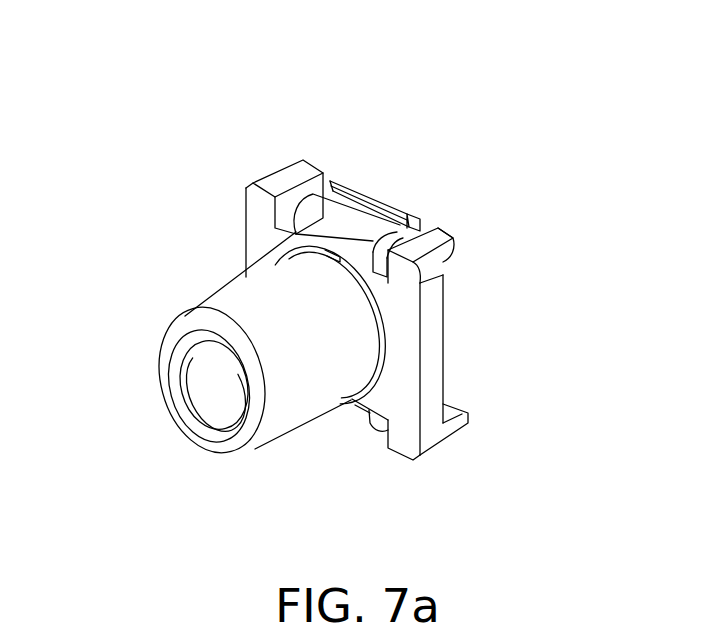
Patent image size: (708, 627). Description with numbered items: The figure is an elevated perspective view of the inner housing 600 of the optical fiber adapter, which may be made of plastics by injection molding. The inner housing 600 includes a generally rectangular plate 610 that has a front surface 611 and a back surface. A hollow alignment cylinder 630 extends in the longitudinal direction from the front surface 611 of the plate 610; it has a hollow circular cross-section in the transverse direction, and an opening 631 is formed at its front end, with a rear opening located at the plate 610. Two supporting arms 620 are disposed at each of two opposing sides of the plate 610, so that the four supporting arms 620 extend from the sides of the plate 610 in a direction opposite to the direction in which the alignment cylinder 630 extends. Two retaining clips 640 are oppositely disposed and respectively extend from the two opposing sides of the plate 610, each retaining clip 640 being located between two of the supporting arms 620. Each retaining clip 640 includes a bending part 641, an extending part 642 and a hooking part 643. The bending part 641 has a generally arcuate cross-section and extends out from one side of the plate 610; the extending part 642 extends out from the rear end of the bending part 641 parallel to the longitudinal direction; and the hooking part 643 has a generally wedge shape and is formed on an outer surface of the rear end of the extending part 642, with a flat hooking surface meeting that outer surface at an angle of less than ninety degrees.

The inner housing 600 is at (185, 128).
The plate 610 is at (430, 362).
The front surface 611 is at (403, 313).
The supporting arms 620 is at (278, 174).
The alignment cylinder 630 is at (225, 302).
The opening 631 is at (213, 393).
The retaining clips 640 is at (388, 180).
The bending part 641 is at (335, 220).
The extending part 642 is at (458, 231).
The hooking part 643 is at (400, 213).